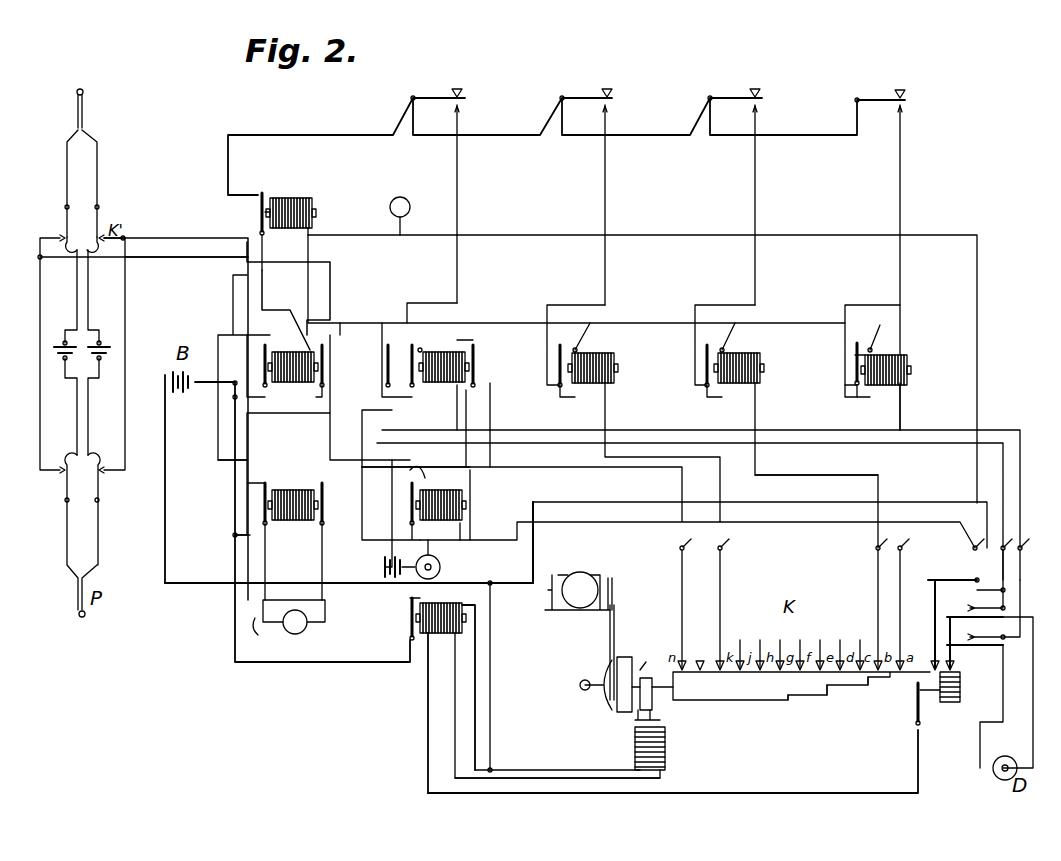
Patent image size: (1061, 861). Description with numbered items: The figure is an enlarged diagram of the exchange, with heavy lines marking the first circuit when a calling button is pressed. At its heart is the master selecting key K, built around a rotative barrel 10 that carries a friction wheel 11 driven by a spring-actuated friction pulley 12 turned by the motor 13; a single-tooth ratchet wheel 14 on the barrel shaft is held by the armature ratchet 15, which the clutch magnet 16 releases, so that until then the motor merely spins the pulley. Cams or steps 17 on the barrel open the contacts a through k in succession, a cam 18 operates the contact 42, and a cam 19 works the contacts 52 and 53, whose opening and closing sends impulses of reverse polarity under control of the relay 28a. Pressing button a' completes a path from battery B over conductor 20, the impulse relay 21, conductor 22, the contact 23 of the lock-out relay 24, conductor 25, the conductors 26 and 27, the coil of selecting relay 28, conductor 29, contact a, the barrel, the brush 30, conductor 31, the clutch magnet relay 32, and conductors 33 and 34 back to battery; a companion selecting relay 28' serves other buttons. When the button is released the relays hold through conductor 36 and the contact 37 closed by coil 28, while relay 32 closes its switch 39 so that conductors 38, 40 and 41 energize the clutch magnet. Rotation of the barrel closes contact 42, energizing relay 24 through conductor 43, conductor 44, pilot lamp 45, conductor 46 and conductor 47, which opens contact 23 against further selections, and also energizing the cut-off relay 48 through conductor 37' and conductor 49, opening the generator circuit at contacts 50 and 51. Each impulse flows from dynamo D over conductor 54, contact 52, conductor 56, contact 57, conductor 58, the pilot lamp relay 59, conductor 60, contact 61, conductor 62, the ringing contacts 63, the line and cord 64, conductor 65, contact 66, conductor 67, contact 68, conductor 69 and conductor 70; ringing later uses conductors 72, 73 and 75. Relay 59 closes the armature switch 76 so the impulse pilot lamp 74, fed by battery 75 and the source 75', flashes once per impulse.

The rotative barrel 10 is at (745, 700).
The friction wheel 11 is at (622, 712).
The friction pulley 12 is at (602, 700).
The motor 13 is at (582, 580).
The ratchet wheel 14 is at (645, 675).
The armature ratchet 15 is at (660, 720).
The clutch magnet 16 is at (665, 763).
The cams or steps 17 is at (858, 700).
The cam 18 is at (940, 655).
The cam 19 is at (962, 678).
The conductor 20 is at (232, 385).
The impulse relay 21 is at (292, 383).
The conductor 22 is at (265, 288).
The contact or switch 23 is at (262, 193).
The lock-out non-interfering relay 24 is at (295, 198).
The conductor 25 is at (270, 135).
The conductor 26 is at (902, 182).
The conductor 27 is at (862, 395).
The selecting relay 28 is at (737, 413).
The selecting relay 28' is at (786, 426).
The relay 28a is at (440, 345).
The conductor 29 is at (905, 405).
The brush 30 is at (915, 716).
The conductor 31 is at (818, 793).
The clutch magnet relay 32 is at (438, 636).
The conductor 33 is at (457, 670).
The conductor 34 is at (480, 583).
The conductor 36 is at (380, 323).
The contact or switch 37 is at (299, 522).
The conductor 37' is at (221, 547).
The conductor 38 is at (233, 600).
The contact or switch 39 is at (410, 602).
The conductor 40 is at (477, 688).
The conductor 41 is at (542, 778).
The contact 42 is at (937, 580).
The conductor 43 is at (233, 303).
The conductor 44 is at (345, 228).
The pilot lamp 45 is at (405, 200).
The conductor 46 is at (505, 235).
The conductor 47 is at (925, 503).
The cut-off relay 48 is at (296, 521).
The conductor 49 is at (580, 522).
The contact 50 is at (262, 483).
The contact or switch 51 is at (322, 483).
The contact or switch 52 is at (985, 632).
The contact or switch 53 is at (985, 603).
The conductor 54 is at (1003, 715).
The conductor 56 is at (493, 392).
The contact or switch 57 is at (476, 345).
The conductor 58 is at (470, 492).
The pilot lamp relay 59 is at (445, 490).
The conductor 60 is at (370, 497).
The contact or switch 61 is at (262, 345).
The conductor 62 is at (165, 242).
The ringing contacts 63 is at (100, 235).
The cord 64 is at (67, 184).
The conductor 65 is at (175, 260).
The contact 66 is at (322, 345).
The conductor 67 is at (418, 399).
The contact 68 is at (392, 345).
The conductor 69 is at (385, 433).
The conductor 70 is at (325, 600).
The conductor 72 is at (330, 418).
The conductor 73 is at (247, 430).
The impulse pilot lamp 74 is at (440, 567).
The battery 75 is at (379, 559).
The source 75' is at (261, 636).
The armature switch 76 is at (431, 461).